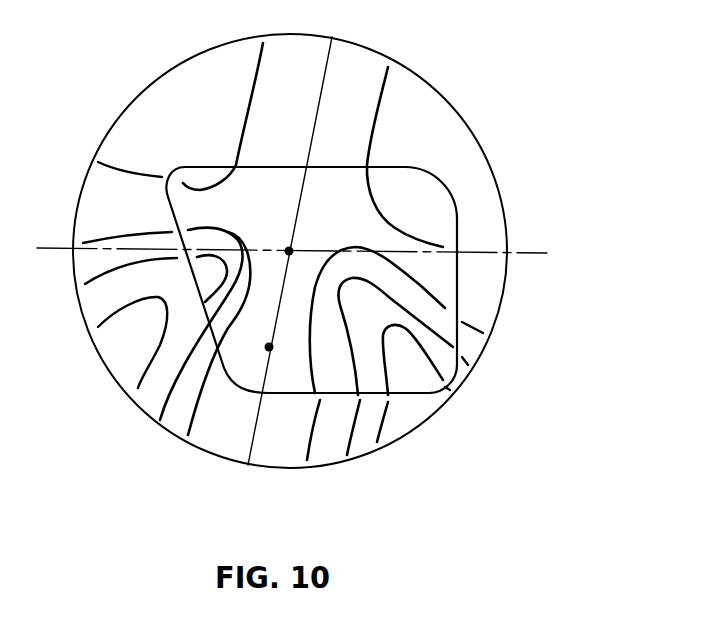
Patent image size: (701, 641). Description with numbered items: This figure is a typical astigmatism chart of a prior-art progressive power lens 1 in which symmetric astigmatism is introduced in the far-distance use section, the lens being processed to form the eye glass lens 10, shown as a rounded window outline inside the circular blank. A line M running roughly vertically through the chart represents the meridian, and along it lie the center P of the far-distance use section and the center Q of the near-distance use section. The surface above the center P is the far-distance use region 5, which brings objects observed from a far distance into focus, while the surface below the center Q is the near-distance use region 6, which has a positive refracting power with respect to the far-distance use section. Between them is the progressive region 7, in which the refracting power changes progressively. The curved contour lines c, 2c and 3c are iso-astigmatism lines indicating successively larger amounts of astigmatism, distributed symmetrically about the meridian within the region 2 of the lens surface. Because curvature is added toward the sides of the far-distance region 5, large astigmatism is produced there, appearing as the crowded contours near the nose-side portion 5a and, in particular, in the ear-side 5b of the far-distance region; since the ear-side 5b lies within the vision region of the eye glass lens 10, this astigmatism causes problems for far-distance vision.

The fingerprint image 1 is at (498, 148).
The fingerprint ridge region 2 is at (482, 188).
The far-distance use region 5 is at (372, 60).
The ridge line 5a is at (197, 202).
The ear-side of the far-distance region 5b is at (440, 221).
The near-distance use region 6 is at (282, 372).
The progressive region 7 is at (228, 232).
The eye glass lens 10 is at (433, 162).
The center of the far-distance use section P is at (298, 247).
The center of the near-distance use section Q is at (268, 346).
The axis line M-M' M is at (249, 483).
The ridge c is at (292, 246).
The ridge 2c is at (274, 323).
The ridge 3c is at (269, 361).